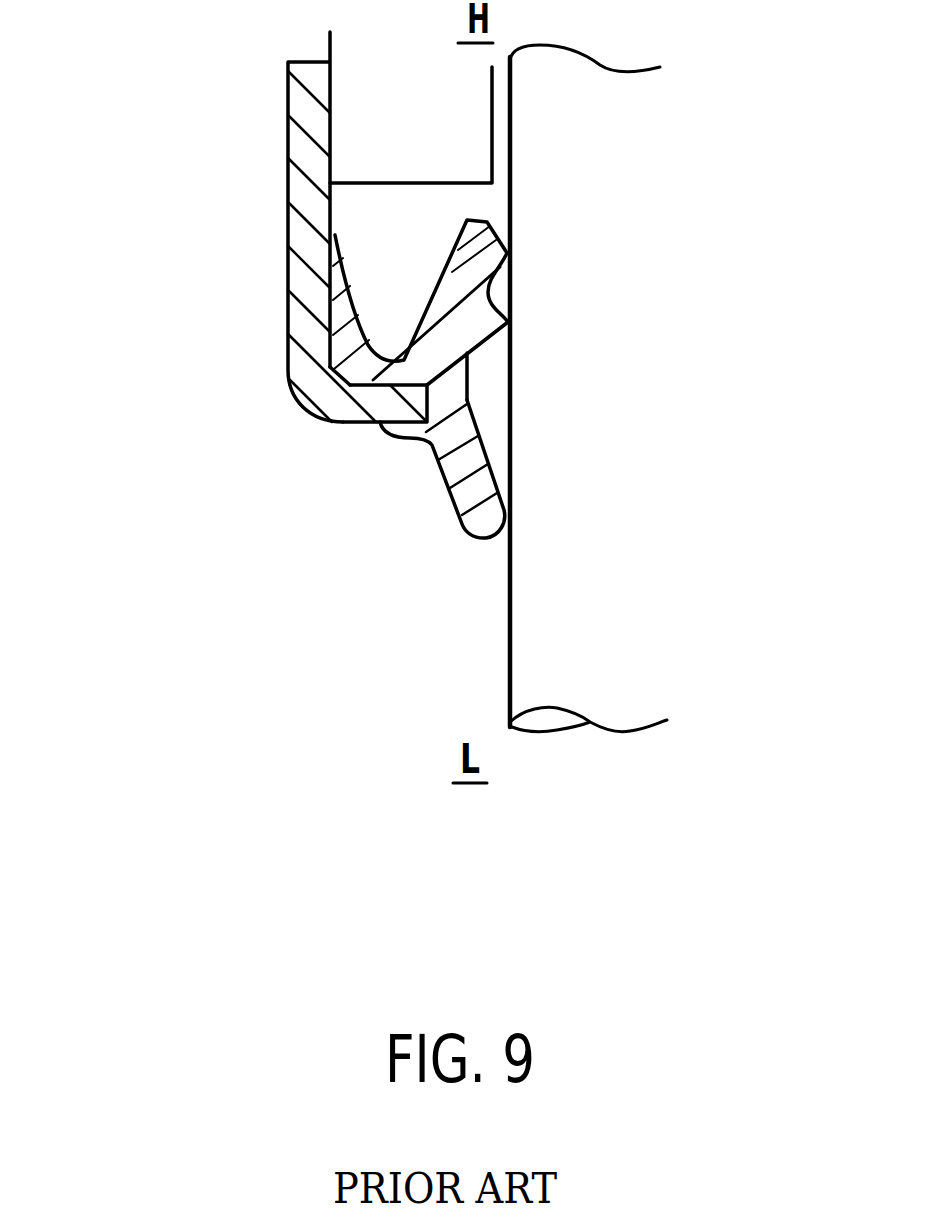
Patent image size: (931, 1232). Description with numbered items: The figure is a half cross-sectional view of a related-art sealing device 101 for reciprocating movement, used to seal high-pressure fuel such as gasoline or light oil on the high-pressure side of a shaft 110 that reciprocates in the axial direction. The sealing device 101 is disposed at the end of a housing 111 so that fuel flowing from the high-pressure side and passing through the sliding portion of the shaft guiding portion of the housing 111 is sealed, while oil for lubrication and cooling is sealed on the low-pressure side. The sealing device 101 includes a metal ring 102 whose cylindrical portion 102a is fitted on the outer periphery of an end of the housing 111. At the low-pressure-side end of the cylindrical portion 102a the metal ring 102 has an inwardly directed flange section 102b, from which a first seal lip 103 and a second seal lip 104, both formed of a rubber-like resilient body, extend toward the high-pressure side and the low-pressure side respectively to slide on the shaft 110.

The sealing device 101 is at (287, 457).
The metal ring 102 is at (289, 305).
The cylindrical portion 102a is at (307, 191).
The inwardly directed flange section 102b is at (372, 404).
The first seal lip 103 is at (490, 262).
The second seal lip 104 is at (510, 533).
The shaft 110 is at (573, 442).
The housing 111 is at (378, 137).